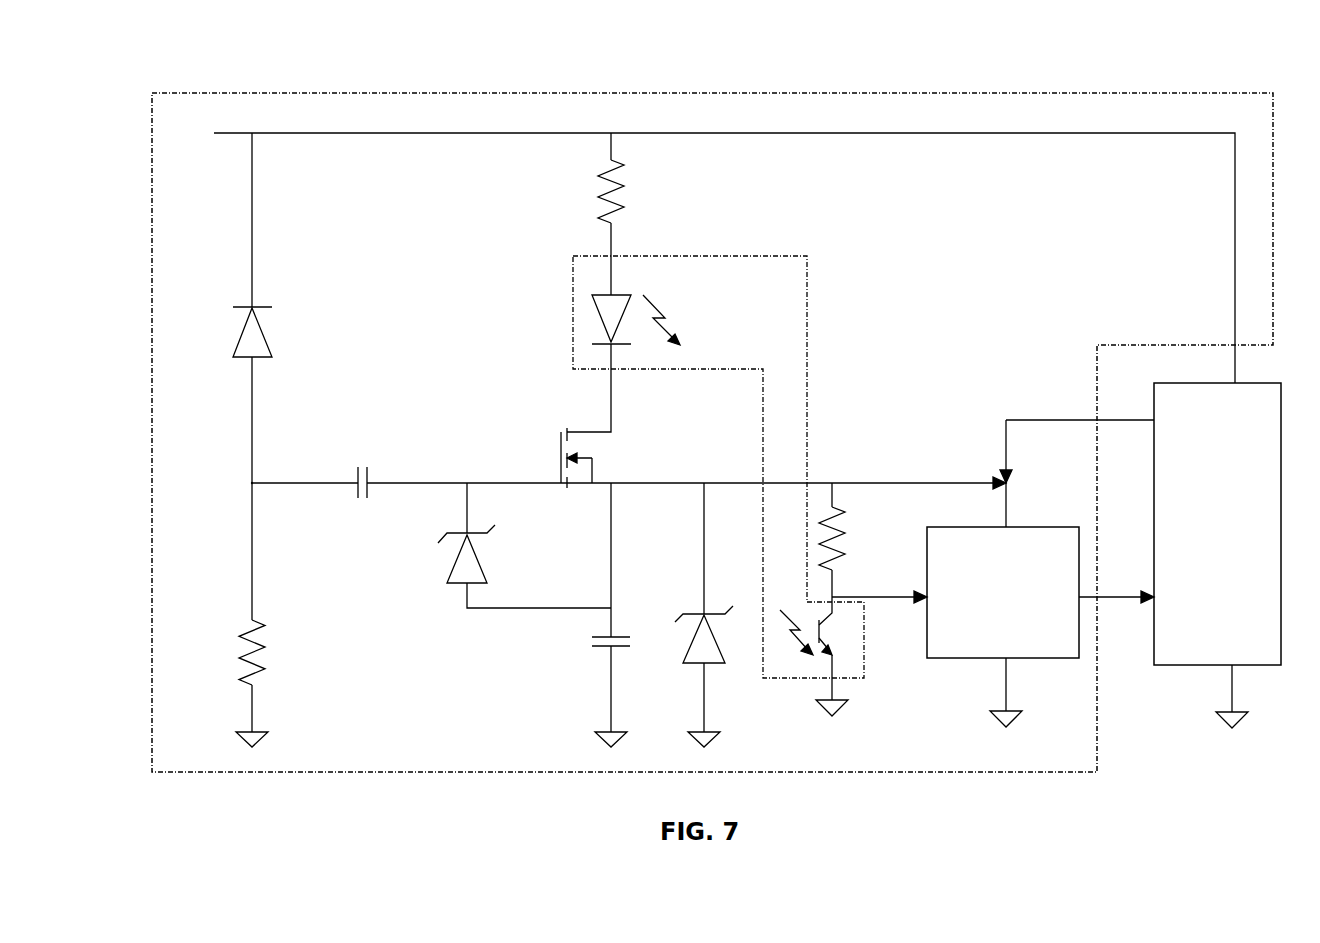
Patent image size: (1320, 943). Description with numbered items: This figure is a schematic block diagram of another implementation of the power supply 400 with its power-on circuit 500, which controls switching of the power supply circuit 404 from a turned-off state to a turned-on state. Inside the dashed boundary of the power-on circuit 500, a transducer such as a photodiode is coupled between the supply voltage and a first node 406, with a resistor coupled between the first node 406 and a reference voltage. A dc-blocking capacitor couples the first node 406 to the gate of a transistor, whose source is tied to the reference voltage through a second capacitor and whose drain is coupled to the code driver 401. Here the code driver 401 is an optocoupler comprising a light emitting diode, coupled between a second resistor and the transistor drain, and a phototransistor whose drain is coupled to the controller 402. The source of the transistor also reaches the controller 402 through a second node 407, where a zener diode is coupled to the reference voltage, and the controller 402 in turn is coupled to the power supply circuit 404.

The power supply 400 is at (213, 44).
The power-on circuit 500 is at (555, 94).
The code driver 401 is at (807, 256).
The first node 406 is at (252, 483).
The second node 407 is at (1011, 484).
The controller 402 is at (958, 659).
The power supply circuit 404 is at (1177, 665).